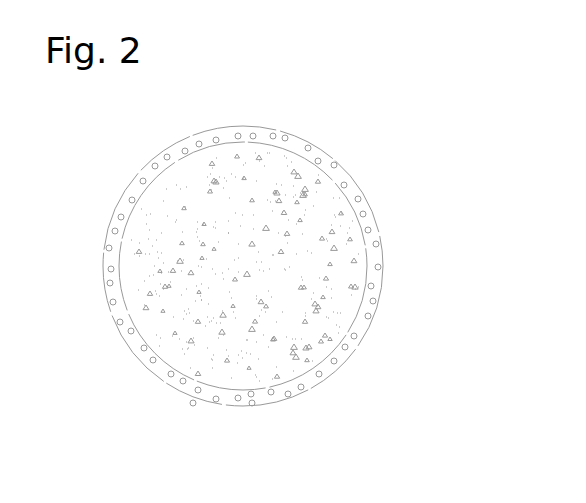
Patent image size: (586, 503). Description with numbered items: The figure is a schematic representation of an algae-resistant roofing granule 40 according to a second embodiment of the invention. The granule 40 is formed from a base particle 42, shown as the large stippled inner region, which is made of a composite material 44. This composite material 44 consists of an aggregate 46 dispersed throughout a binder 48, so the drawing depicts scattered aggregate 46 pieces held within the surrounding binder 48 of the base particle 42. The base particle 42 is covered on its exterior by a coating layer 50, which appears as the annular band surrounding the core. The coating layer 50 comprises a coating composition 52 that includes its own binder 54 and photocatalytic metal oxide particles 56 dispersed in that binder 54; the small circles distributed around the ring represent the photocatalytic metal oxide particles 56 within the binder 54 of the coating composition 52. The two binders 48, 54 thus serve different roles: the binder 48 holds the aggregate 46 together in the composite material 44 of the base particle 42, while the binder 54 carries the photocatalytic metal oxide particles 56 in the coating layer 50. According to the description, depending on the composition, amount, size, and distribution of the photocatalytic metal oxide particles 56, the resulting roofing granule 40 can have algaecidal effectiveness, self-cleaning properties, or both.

The algae-resistant granule 40 is at (215, 243).
The base particle 42 is at (215, 296).
The composite material 44 is at (307, 175).
The aggregate 46 is at (340, 225).
The binder 48 is at (310, 288).
The coating layer 50 is at (338, 370).
The coating composition 52 is at (373, 323).
The binder 54 is at (102, 258).
The photocatalytic metal oxide particles 56 is at (252, 406).